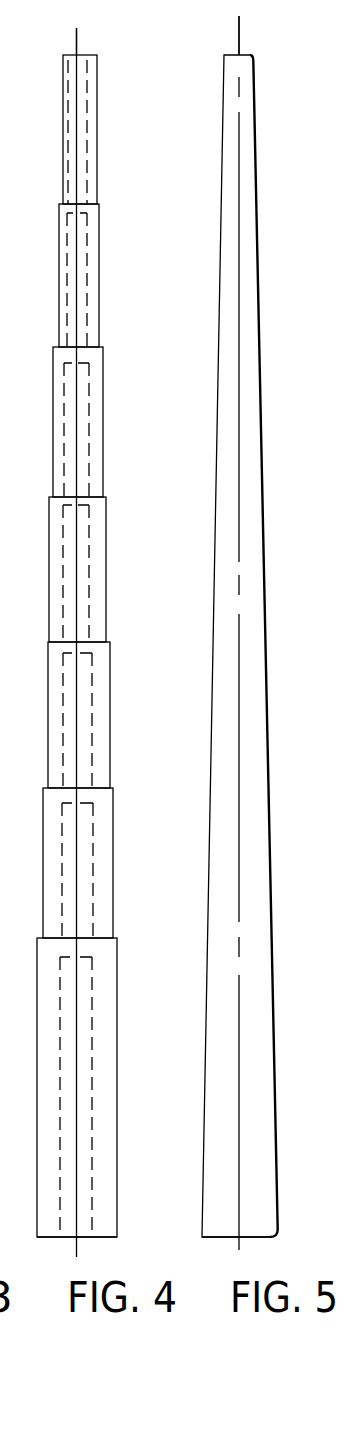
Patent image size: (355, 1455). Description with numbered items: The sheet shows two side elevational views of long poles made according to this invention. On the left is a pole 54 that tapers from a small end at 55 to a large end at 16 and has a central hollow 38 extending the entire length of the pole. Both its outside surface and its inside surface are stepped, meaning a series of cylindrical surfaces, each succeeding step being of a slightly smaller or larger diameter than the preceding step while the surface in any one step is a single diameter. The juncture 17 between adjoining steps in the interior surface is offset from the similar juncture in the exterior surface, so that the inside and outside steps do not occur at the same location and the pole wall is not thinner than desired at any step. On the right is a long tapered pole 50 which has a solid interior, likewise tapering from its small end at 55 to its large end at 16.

In FIG. 4, the large end 16 is at (92, 1237).
In FIG. 5, the large end 16 is at (230, 1237).
In FIG. 4, the juncture between adjoining steps 17 is at (80, 215).
In FIG. 4, the central hollow 38 is at (77, 577).
In FIG. 5, the long tapered pole 50 is at (218, 395).
In FIG. 4, the pole 54 is at (53, 403).
In FIG. 4, the small end 55 is at (77, 55).
In FIG. 5, the small end 55 is at (240, 57).